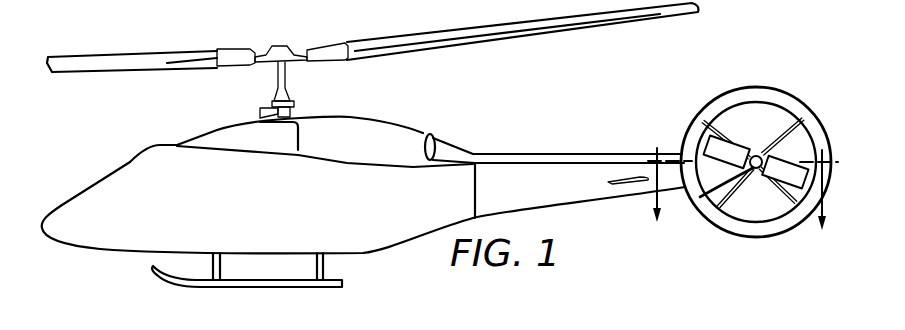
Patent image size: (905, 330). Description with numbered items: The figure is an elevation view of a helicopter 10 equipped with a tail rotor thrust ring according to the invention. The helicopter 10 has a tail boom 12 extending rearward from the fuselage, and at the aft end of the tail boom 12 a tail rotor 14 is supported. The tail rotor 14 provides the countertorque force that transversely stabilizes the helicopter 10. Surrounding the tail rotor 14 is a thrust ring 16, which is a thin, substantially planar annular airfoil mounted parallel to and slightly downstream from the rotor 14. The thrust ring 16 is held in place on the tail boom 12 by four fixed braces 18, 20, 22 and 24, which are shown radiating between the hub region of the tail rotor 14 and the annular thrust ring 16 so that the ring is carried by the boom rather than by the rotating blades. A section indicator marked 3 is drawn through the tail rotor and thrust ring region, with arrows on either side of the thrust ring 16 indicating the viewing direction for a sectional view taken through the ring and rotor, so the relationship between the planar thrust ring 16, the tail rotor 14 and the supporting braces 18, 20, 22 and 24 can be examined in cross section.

The helicopter 10 is at (119, 135).
The tail boom 12 is at (515, 157).
The tail rotor 14 is at (731, 150).
The thrust ring 16 is at (737, 229).
The fixed brace 18 is at (733, 116).
The fixed brace 20 is at (790, 123).
The fixed brace 22 is at (783, 203).
The fixed brace 24 is at (723, 203).
The section line 3- 3 is at (740, 205).